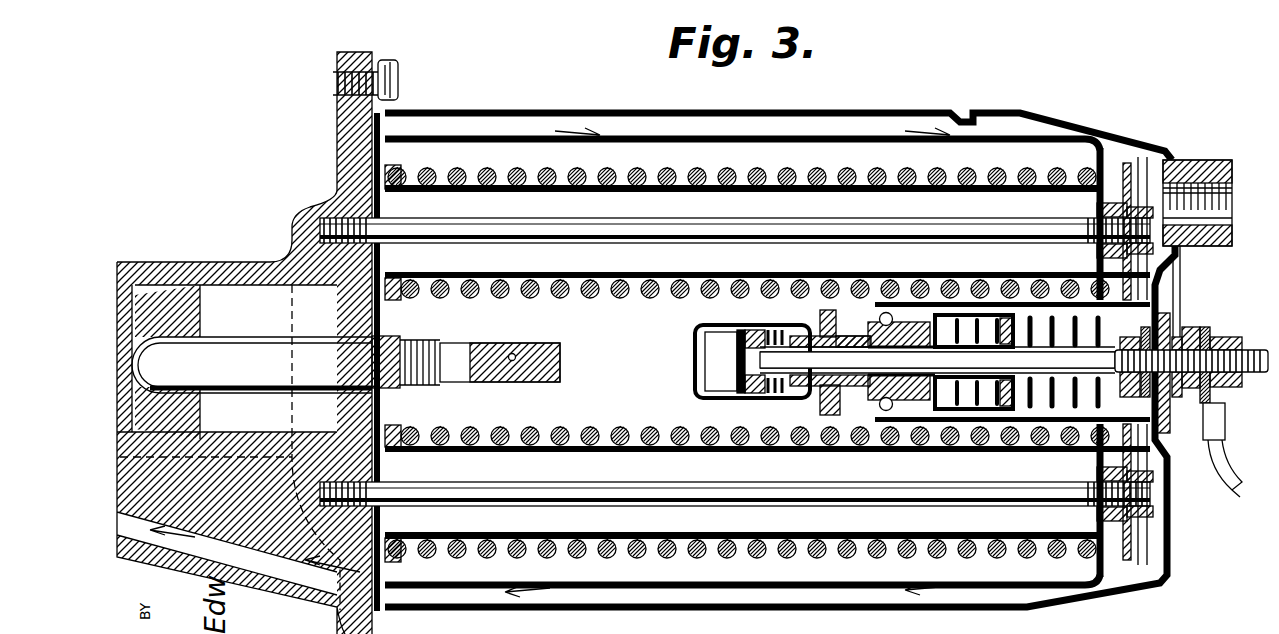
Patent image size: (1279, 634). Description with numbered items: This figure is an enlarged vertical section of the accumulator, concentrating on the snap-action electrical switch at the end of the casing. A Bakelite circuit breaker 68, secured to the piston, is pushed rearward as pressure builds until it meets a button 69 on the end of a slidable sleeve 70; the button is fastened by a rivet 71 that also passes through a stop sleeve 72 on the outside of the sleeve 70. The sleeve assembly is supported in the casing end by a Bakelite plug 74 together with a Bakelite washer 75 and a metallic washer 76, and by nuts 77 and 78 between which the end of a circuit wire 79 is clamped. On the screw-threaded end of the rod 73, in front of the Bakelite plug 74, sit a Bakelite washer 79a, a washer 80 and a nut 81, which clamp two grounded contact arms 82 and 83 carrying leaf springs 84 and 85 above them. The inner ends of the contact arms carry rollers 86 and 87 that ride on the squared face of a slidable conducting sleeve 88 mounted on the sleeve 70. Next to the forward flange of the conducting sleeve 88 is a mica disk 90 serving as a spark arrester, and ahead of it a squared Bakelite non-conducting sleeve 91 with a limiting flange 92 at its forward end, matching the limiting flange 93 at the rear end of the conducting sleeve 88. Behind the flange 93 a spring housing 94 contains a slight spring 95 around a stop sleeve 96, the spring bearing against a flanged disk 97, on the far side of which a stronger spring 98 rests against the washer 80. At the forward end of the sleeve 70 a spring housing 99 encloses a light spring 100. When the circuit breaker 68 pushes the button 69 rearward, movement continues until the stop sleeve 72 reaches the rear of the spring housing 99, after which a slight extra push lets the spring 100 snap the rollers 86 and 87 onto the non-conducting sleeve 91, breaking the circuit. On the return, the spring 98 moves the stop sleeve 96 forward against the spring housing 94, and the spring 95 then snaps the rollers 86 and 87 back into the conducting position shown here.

The circuit breaker 68 is at (520, 348).
The button 69 is at (712, 358).
The slidable sleeve 70 is at (778, 390).
The rivet 71 is at (765, 342).
The stop sleeve 72 is at (752, 395).
The rod 73 is at (1248, 355).
The Bakelite plug 74 is at (1192, 340).
The Bakelite washer 75 is at (1150, 330).
The metallic washer 76 is at (1162, 345).
The nut 77 is at (1224, 415).
The nut 78 is at (1225, 392).
The circuit wire 79 is at (1237, 492).
The Bakelite washer 79a is at (1165, 330).
The washer 80 is at (1160, 300).
The nut 81 is at (1115, 375).
The grounded contact arm 82 is at (1032, 340).
The grounded contact arm 83 is at (1025, 400).
The leaf spring 84 is at (1050, 336).
The leaf spring 85 is at (1005, 430).
The roller 86 is at (882, 312).
The roller 87 is at (878, 425).
The conducting sleeve 88 is at (878, 402).
The mica disk 90 is at (830, 393).
The non-conducting sleeve 91 is at (848, 336).
The limiting flange 92 is at (826, 308).
The limiting flange 93 is at (918, 320).
The spring housing 94 is at (962, 320).
The spring 95 is at (1003, 325).
The stop sleeve 96 is at (960, 412).
The flanged disk 97 is at (990, 412).
The spring 98 is at (1080, 338).
The spring housing 99 is at (750, 332).
The spring 100 is at (725, 395).